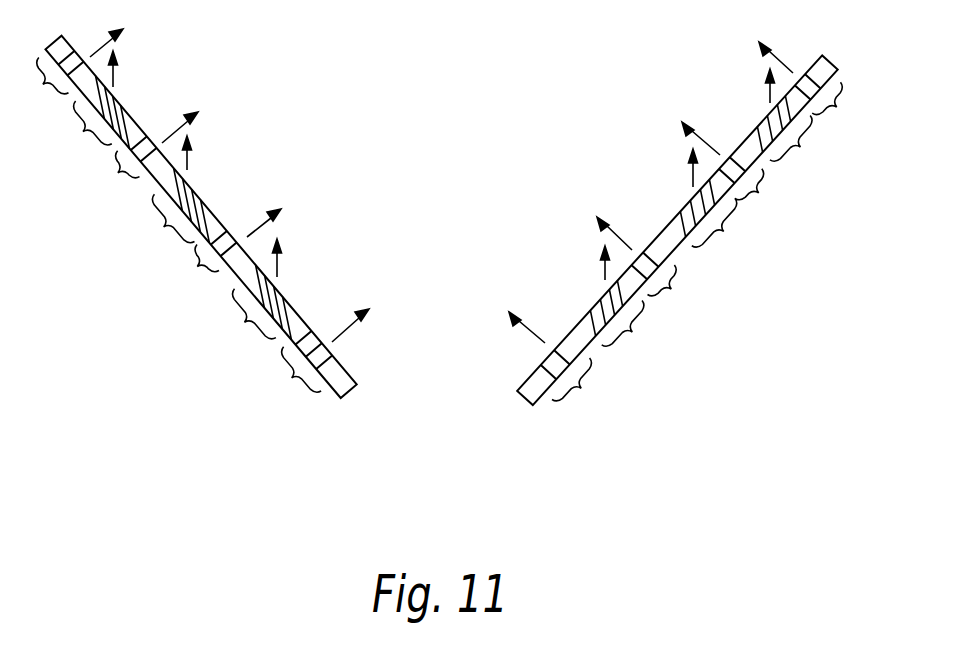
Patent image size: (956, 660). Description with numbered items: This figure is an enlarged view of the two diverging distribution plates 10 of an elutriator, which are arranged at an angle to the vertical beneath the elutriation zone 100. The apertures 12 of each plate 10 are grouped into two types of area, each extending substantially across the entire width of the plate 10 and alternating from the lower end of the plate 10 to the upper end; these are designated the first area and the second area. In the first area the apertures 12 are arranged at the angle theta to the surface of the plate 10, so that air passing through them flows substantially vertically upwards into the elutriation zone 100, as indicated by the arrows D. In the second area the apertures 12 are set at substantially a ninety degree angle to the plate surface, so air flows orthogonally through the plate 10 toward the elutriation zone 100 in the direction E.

The distribution plate 10 is at (351, 392).
The aperture 12 is at (323, 366).
The elutriation zone 100 is at (457, 116).